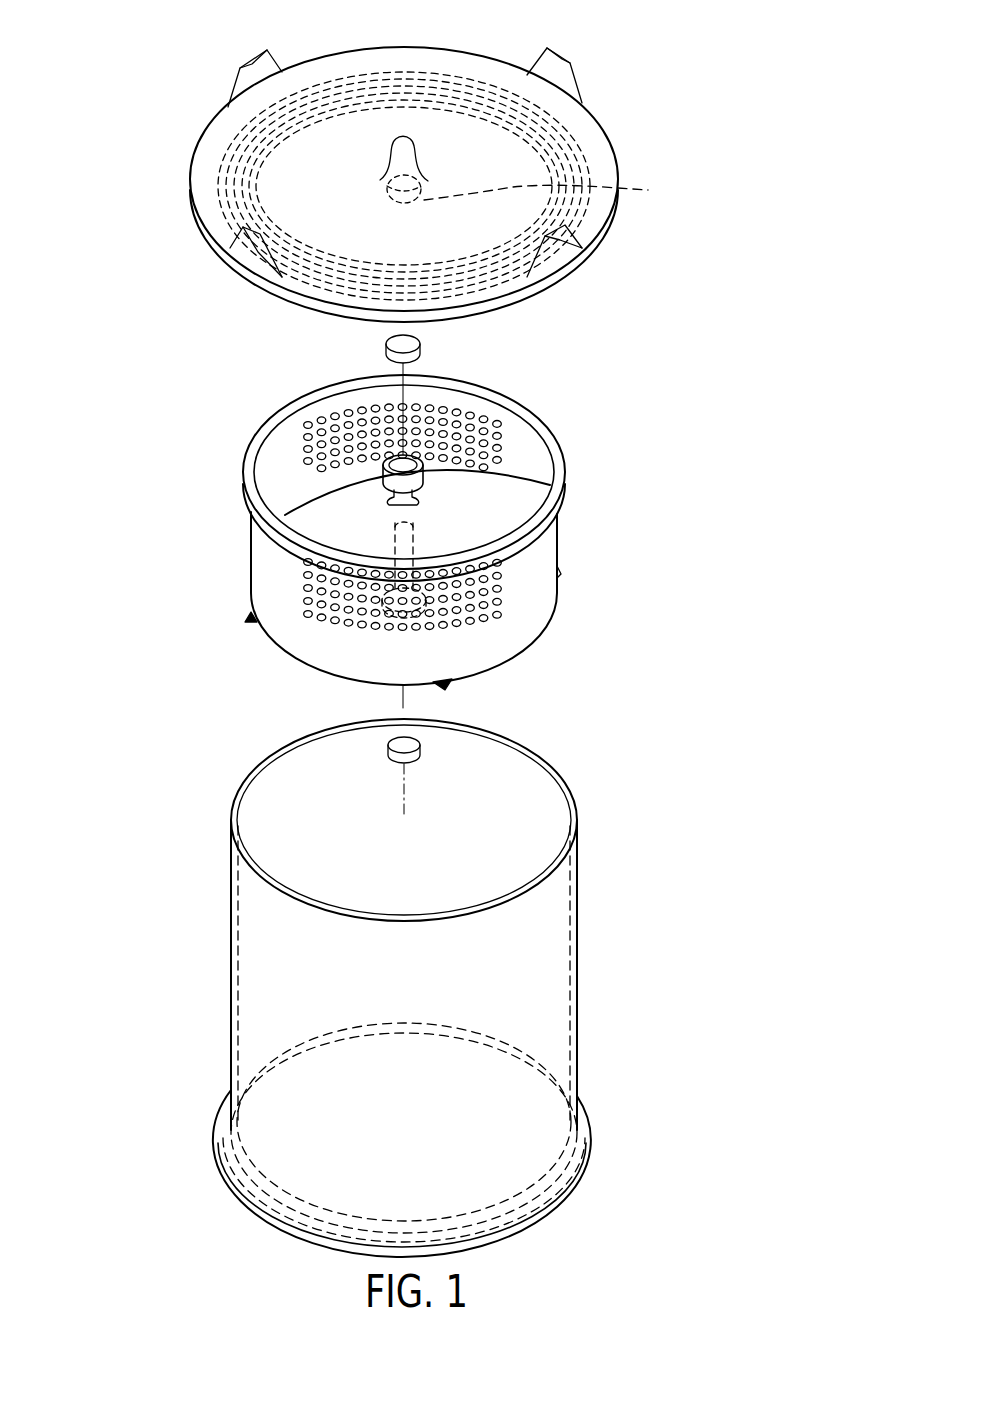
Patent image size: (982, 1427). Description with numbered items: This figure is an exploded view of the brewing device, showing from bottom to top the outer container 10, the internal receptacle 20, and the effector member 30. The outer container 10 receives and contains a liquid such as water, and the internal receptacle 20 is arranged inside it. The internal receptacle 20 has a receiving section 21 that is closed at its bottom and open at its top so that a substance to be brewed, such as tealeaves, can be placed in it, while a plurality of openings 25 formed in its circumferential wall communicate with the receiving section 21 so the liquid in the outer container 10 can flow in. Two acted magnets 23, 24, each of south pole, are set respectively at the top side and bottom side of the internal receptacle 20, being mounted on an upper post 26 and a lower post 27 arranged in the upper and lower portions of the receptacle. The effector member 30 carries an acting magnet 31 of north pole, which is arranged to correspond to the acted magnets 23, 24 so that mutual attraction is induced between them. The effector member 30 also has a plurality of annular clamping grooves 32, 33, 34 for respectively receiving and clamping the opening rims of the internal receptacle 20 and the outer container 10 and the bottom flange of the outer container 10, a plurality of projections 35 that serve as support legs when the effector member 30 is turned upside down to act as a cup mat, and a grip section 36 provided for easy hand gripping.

The outer container 10 is at (575, 984).
The internal receptacle 20 is at (567, 539).
The receiving section 21 is at (483, 517).
The acted magnet 23 is at (423, 346).
The acted magnet 24 is at (389, 741).
The openings 25 is at (497, 437).
The upper post 26 is at (386, 490).
The lower post 27 is at (393, 538).
The effector member 30 is at (203, 111).
The acting magnet 31 is at (550, 191).
The annular clamping groove 32 is at (237, 140).
The annular clamping groove 33 is at (222, 162).
The annular clamping groove 34 is at (218, 183).
The projections 35 is at (572, 63).
The grip section 36 is at (409, 138).